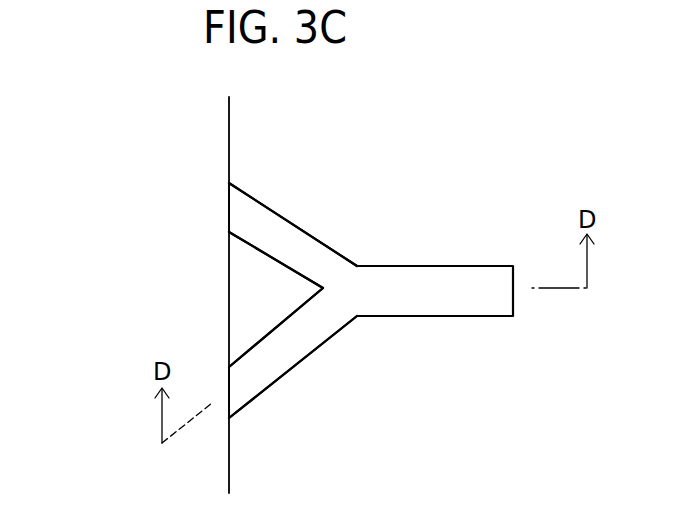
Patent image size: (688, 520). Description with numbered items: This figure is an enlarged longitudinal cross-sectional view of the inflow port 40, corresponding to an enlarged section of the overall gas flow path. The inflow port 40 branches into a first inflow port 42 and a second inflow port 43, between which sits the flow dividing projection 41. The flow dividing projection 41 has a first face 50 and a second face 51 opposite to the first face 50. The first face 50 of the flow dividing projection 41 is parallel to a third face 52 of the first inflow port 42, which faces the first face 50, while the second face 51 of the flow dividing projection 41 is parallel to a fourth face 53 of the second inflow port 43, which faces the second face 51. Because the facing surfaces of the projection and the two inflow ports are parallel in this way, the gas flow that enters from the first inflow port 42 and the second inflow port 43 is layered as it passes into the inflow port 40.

The inflow port 40 is at (458, 265).
The flow dividing projection 41 is at (257, 298).
The first inflow port 42 is at (262, 218).
The second inflow port 43 is at (278, 355).
The first face 50 is at (229, 232).
The second face 51 is at (247, 353).
The third face 52 is at (300, 232).
The fourth face 53 is at (307, 350).